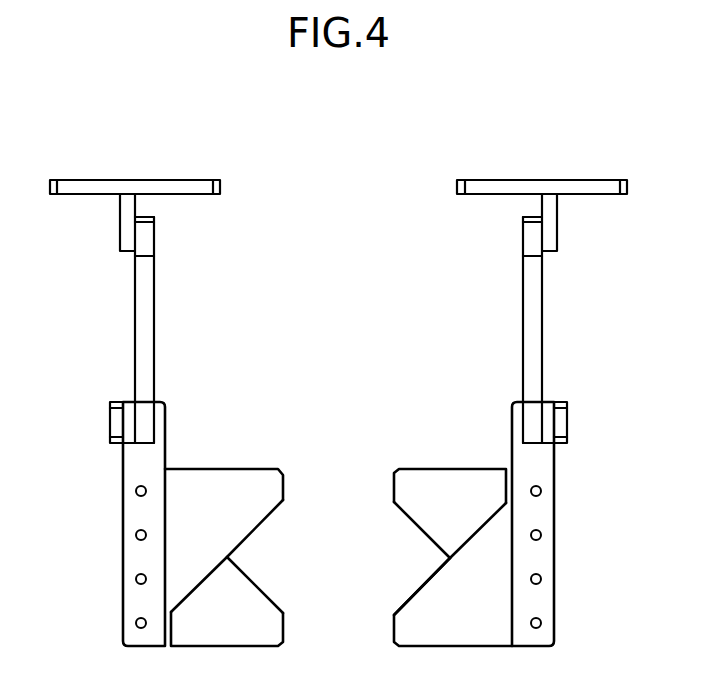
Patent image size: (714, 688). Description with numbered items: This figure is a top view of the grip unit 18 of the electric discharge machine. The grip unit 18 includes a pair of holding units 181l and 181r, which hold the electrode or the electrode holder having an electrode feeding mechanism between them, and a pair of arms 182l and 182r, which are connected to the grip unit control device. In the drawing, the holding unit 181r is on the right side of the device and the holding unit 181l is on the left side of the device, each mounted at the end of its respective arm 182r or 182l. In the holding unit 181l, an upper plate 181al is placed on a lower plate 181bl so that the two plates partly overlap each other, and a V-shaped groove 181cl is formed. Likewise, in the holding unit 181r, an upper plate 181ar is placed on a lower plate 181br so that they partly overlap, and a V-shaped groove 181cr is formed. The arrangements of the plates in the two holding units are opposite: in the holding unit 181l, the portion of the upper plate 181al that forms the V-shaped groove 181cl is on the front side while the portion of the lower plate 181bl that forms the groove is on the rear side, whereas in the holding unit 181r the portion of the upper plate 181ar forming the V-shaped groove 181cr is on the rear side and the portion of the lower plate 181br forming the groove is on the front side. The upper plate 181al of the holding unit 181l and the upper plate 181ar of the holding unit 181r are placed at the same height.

The grip unit 18 is at (331, 171).
The arm 182r is at (145, 283).
The arm 182l is at (530, 283).
The holding unit 181r is at (132, 469).
The holding unit 181l is at (545, 468).
The upper plate 181ar is at (182, 515).
The upper plate 181al is at (495, 602).
The lower plate 181br is at (202, 602).
The lower plate 181bl is at (477, 502).
The V-shaped groove 181cr is at (270, 563).
The V-shaped groove 181cl is at (420, 560).